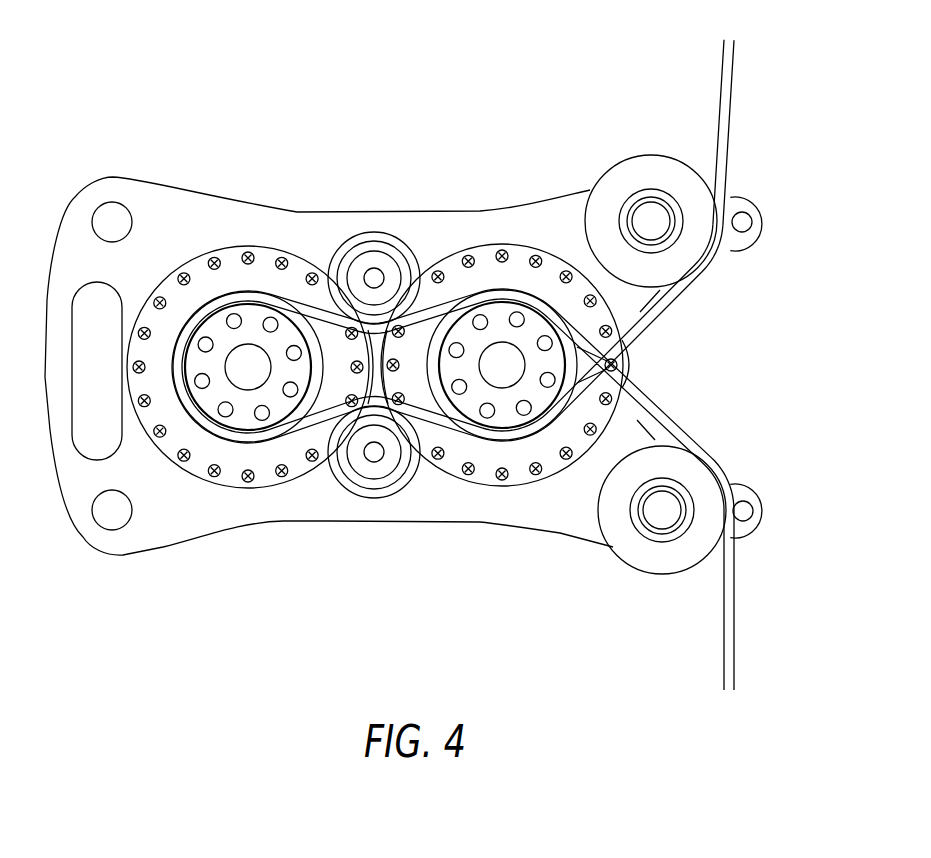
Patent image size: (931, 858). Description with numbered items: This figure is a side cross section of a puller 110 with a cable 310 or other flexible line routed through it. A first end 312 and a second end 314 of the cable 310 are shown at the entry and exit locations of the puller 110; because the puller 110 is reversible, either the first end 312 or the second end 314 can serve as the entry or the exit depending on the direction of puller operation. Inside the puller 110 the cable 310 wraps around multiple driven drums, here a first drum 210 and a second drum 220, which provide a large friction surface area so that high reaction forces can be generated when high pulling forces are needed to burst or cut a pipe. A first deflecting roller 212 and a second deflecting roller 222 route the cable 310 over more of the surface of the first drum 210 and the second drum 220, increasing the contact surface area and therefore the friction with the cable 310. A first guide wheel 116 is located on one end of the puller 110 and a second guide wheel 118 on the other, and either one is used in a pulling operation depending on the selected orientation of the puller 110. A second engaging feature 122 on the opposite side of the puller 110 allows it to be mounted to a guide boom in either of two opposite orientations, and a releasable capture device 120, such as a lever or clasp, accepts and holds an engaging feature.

The puller 110 is at (118, 59).
The first guide wheel 116 is at (690, 258).
The second guide wheel 118 is at (663, 505).
The releasable capture device 120 is at (745, 513).
The second engaging feature 122 is at (748, 219).
The first drum 210 is at (488, 417).
The first deflecting roller 212 is at (373, 236).
The second drum 220 is at (223, 410).
The second deflecting roller 222 is at (372, 470).
The cable 310 is at (446, 306).
The first end 312 is at (731, 612).
The second end 314 is at (734, 88).